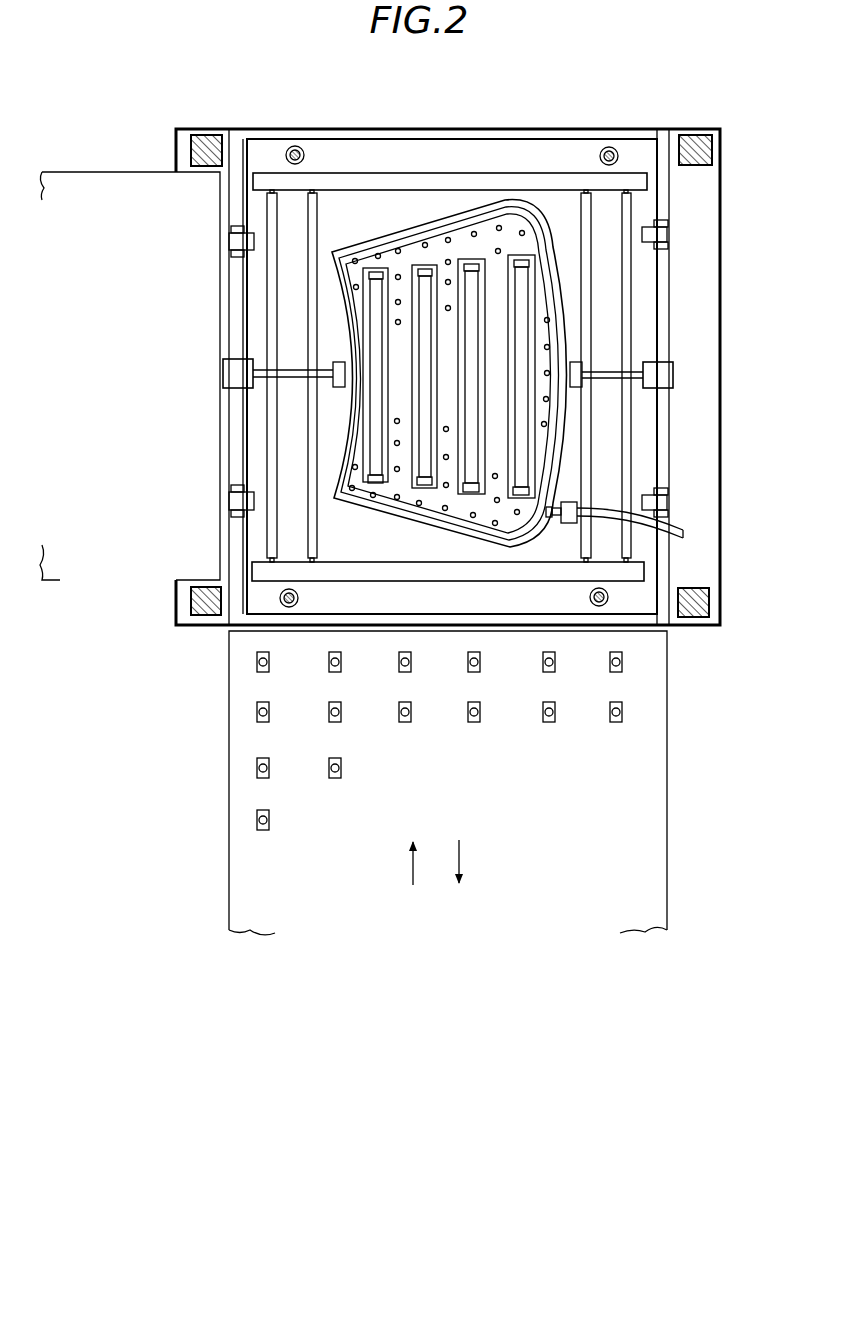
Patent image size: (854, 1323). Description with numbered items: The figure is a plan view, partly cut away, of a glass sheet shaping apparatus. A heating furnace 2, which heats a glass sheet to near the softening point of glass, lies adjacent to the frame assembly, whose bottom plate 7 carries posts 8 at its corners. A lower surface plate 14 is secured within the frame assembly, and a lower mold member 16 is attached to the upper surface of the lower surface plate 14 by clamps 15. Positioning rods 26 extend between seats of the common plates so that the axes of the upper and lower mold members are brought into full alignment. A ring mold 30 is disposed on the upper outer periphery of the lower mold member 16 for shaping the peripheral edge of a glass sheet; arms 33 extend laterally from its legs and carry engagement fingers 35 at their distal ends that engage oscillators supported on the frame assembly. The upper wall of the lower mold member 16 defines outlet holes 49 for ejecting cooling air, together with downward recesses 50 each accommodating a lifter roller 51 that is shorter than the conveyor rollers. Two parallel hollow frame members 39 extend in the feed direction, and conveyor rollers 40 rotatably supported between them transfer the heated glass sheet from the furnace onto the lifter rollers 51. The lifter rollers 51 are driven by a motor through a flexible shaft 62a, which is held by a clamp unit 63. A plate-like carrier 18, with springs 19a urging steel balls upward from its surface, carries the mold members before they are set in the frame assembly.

The heating furnace 2 is at (81, 185).
The bottom plate 7 is at (183, 141).
The posts 8 is at (203, 135).
The lower surface plate 14 is at (238, 143).
The positioning rods 26 is at (295, 146).
The lifter roller 51 is at (420, 288).
The recesses 50 is at (449, 321).
The ring mold 30 is at (545, 353).
The lower mold member 16 is at (508, 237).
The conveyor rollers 40 is at (627, 204).
The clamps 15 is at (240, 240).
The arms 33 is at (295, 368).
The engagement fingers 35 is at (230, 373).
The clamp unit 63 is at (570, 500).
The flexible shaft 62a is at (683, 537).
The outlet holes 49 is at (493, 525).
The frame members 39 is at (383, 575).
The springs 19a is at (262, 667).
The carrier 18 is at (417, 783).